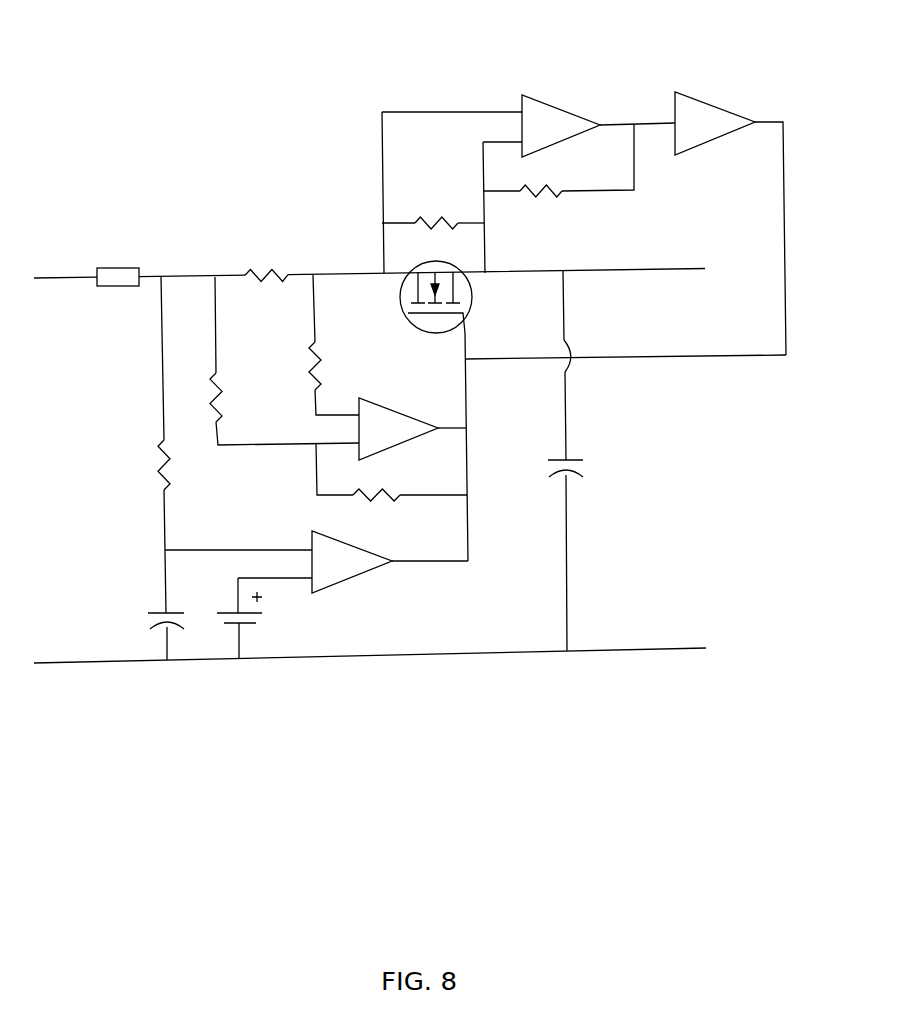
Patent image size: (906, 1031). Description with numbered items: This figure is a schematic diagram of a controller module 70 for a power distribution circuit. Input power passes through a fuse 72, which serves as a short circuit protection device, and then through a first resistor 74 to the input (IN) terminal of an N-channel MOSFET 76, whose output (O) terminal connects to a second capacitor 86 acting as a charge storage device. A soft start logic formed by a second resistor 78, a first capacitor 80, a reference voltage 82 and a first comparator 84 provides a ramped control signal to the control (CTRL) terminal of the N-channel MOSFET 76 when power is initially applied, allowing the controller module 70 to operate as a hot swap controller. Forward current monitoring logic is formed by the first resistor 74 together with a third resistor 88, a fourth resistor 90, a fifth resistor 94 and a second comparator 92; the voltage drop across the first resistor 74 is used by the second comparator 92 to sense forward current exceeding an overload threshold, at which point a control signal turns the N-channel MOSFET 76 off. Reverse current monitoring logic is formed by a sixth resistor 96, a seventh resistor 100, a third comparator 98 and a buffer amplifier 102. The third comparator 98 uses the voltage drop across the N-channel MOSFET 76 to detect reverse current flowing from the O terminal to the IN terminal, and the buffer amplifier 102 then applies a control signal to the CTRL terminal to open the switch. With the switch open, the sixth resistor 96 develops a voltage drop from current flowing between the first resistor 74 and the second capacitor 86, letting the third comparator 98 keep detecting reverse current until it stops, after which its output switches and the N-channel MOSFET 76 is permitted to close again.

The controller module 70 is at (116, 47).
The fuse 72 is at (118, 268).
The first resistor 74 is at (282, 258).
The N-channel metal oxide semiconductor field effect transistor (MOSFET) 76 is at (473, 302).
The second resistor 78 is at (150, 480).
The first capacitor 80 is at (136, 636).
The reference voltage 82 is at (298, 636).
The first comparator 84 is at (360, 575).
The second capacitor 86 is at (540, 480).
The third resistor 88 is at (204, 406).
The fourth resistor 90 is at (303, 375).
The second comparator 92 is at (397, 411).
The fifth resistor 94 is at (386, 530).
The sixth resistor 96 is at (449, 206).
The third comparator 98 is at (522, 94).
The seventh resistor 100 is at (565, 226).
The buffer amplifier 102 is at (674, 91).